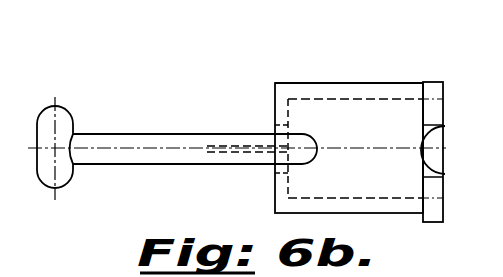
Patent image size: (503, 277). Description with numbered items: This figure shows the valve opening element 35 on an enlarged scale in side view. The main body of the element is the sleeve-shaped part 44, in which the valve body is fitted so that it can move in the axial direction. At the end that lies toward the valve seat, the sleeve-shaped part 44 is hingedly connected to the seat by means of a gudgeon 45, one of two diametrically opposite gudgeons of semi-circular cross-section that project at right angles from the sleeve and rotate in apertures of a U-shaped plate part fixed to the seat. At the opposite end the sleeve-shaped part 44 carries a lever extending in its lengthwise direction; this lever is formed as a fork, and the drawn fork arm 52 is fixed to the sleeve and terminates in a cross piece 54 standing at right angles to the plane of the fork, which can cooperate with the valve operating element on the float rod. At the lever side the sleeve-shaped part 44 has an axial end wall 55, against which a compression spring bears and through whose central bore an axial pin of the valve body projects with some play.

The valve opening element 35 is at (262, 69).
The sleeve-shaped part 44 is at (362, 84).
The gudgeon 45 is at (434, 158).
The fork arm 52 is at (107, 157).
The cross piece 54 is at (60, 118).
The axial end wall 55 is at (277, 105).